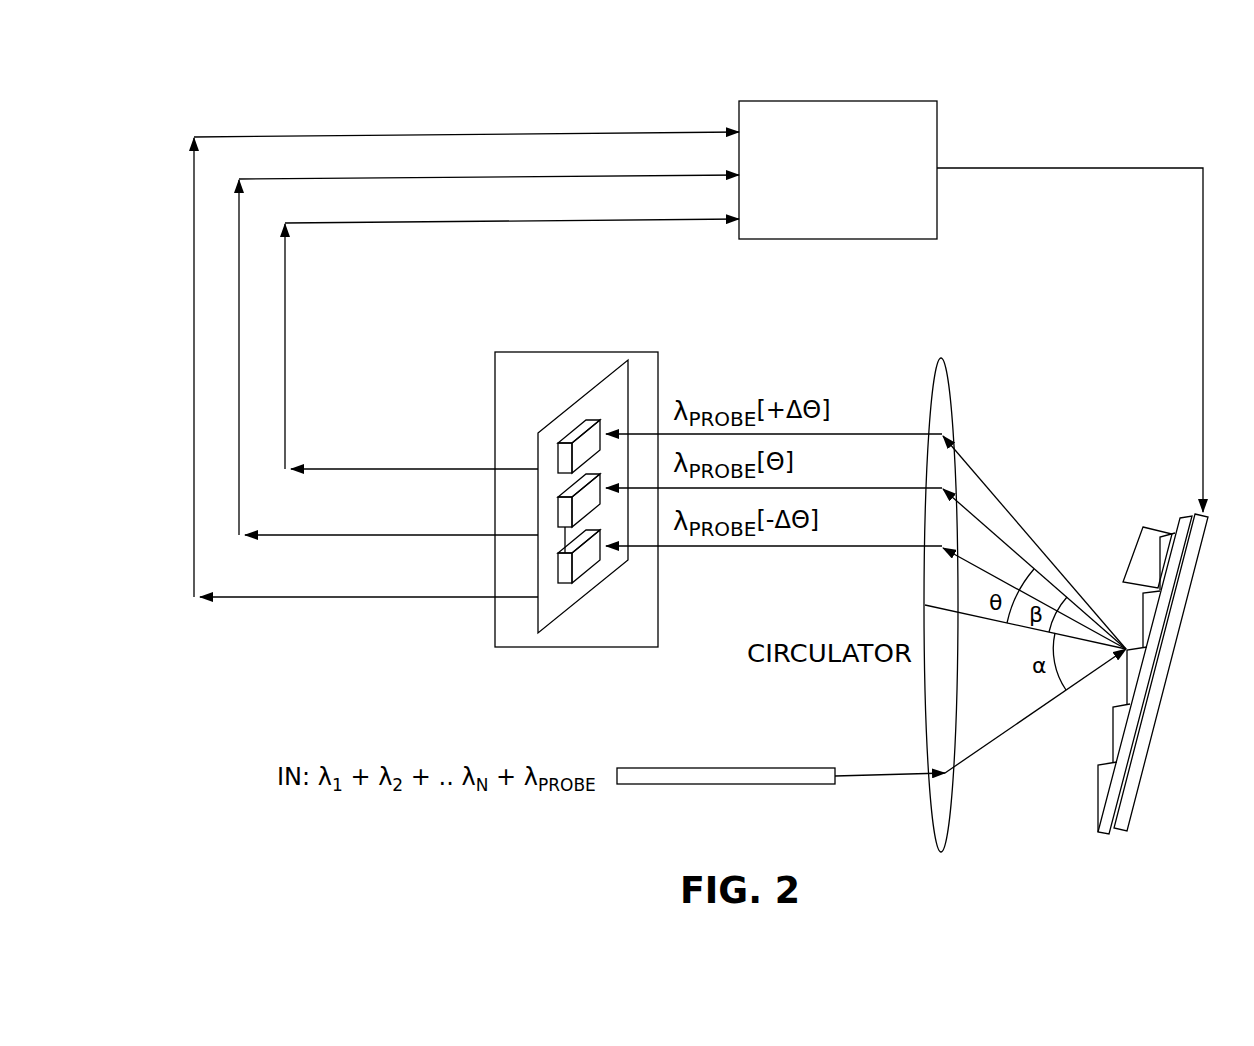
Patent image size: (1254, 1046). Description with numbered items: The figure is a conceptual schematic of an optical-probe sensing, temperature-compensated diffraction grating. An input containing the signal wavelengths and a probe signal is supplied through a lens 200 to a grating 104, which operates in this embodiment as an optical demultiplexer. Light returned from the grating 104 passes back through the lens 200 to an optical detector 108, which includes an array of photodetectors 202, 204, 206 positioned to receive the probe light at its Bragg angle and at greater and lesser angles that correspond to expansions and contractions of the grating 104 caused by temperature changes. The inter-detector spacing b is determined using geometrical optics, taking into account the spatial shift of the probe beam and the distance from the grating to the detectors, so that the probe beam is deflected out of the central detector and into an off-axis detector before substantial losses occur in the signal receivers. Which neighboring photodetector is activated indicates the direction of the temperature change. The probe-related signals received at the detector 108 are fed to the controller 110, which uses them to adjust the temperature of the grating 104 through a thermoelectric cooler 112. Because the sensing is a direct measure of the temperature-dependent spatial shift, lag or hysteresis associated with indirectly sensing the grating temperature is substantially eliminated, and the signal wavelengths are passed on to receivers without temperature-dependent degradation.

The controller 110 is at (836, 101).
The optical detector 108 is at (577, 352).
The photodetector 202 is at (567, 441).
The photodetector 204 is at (558, 513).
The photodetector 206 is at (552, 571).
The inter-detector spacing b is at (560, 538).
The lens 200 is at (948, 397).
The thermoelectric cooler 112 is at (1133, 803).
The grating 104 is at (1103, 834).